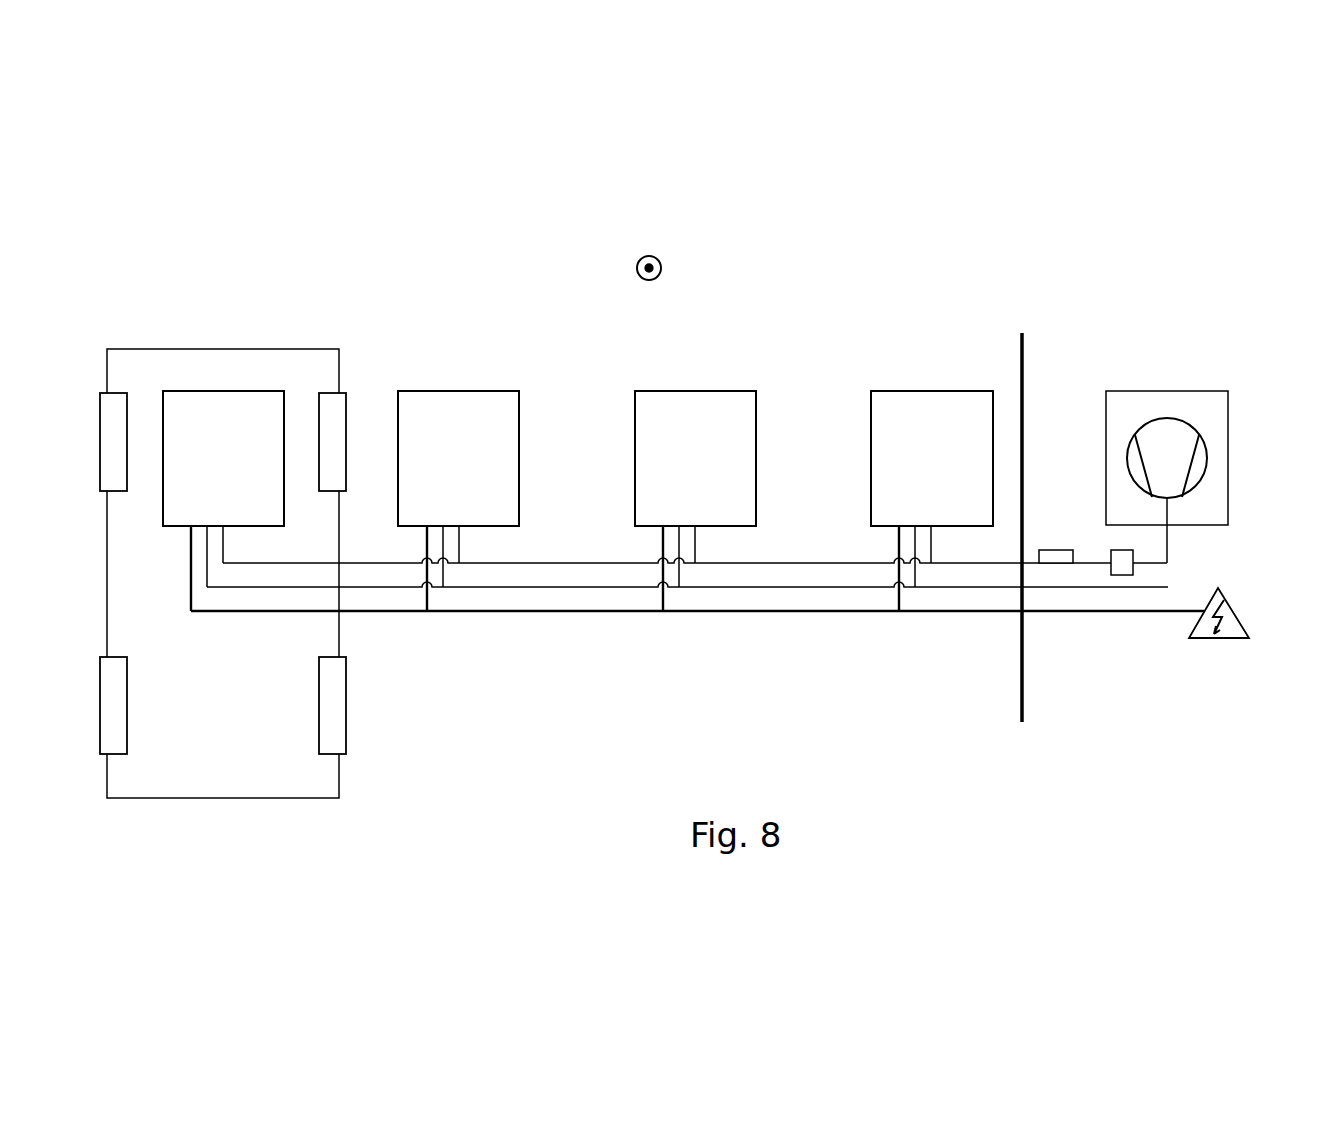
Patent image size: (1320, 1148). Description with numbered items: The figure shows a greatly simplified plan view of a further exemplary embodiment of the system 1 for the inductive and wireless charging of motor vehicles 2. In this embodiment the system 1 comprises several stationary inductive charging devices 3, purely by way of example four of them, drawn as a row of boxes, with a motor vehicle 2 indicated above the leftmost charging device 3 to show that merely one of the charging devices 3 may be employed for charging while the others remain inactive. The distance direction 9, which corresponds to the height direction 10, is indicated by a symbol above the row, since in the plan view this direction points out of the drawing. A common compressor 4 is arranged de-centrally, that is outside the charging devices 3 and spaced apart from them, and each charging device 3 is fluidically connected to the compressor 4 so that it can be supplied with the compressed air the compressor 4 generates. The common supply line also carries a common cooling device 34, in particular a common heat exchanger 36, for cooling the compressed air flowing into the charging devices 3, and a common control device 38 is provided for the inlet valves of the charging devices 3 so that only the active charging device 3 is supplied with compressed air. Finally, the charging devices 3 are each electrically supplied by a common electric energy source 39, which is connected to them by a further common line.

The system 1 is at (1227, 288).
The motor vehicle 2 is at (226, 349).
The stationary inductive charging device 3 is at (230, 468).
The compressor 4 is at (1207, 458).
The distance direction 9 is at (706, 269).
The height direction 10 is at (662, 268).
The cooling device 34 is at (1076, 522).
The heat exchanger 36 is at (1053, 548).
The control device 38 is at (1134, 573).
The electric energy source 39 is at (1245, 612).